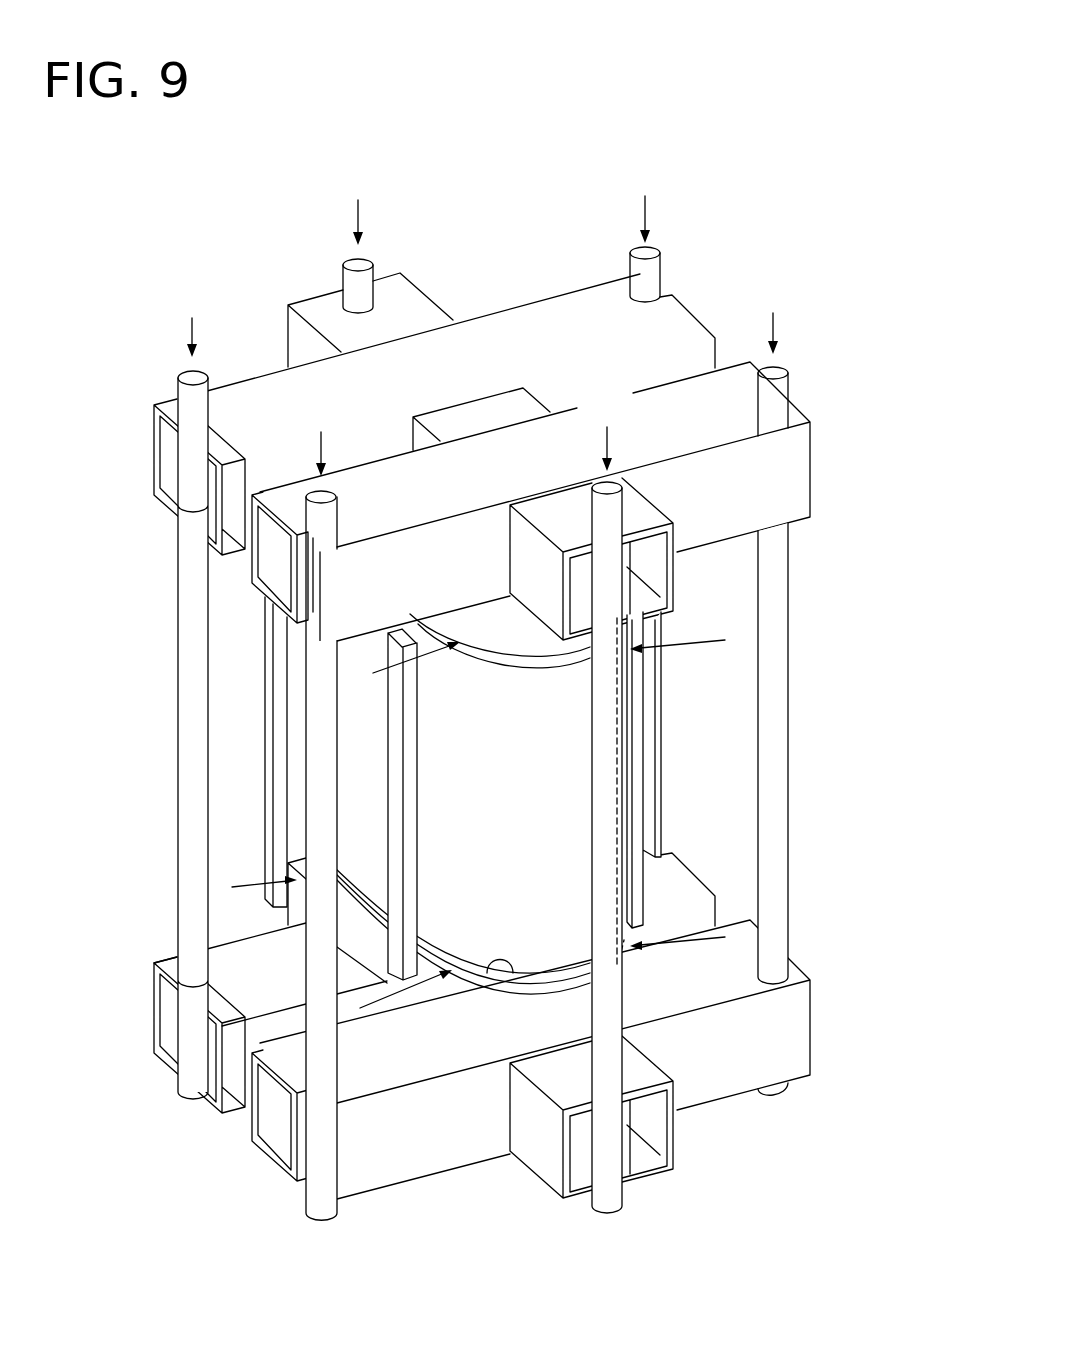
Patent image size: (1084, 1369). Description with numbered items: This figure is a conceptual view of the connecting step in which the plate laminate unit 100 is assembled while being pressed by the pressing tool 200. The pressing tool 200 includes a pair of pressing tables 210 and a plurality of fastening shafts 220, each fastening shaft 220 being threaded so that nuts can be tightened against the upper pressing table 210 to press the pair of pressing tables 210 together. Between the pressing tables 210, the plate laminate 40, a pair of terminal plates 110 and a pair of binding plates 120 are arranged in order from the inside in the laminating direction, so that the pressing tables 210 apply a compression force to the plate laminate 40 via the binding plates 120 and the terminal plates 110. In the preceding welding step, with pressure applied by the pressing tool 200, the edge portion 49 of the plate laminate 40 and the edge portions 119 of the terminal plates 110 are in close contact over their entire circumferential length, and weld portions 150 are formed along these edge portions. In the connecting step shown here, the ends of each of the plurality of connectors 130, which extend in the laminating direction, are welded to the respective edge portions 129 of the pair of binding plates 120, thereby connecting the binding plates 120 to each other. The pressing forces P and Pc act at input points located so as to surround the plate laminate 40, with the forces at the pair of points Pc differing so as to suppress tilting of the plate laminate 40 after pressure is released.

The plate laminate 40 is at (543, 797).
The edge portion 49 is at (622, 887).
The plate laminate unit 100 is at (721, 576).
The terminal plate 110 is at (712, 1084).
The edge portion 119 is at (623, 970).
The binding plate 120 is at (730, 878).
The edge portion 129 is at (622, 597).
The connector 130 is at (270, 653).
The weld portion 150 is at (565, 597).
The pressing tool 200 is at (755, 180).
The pressing table 210 is at (507, 270).
The fastening shaft 220 is at (185, 710).